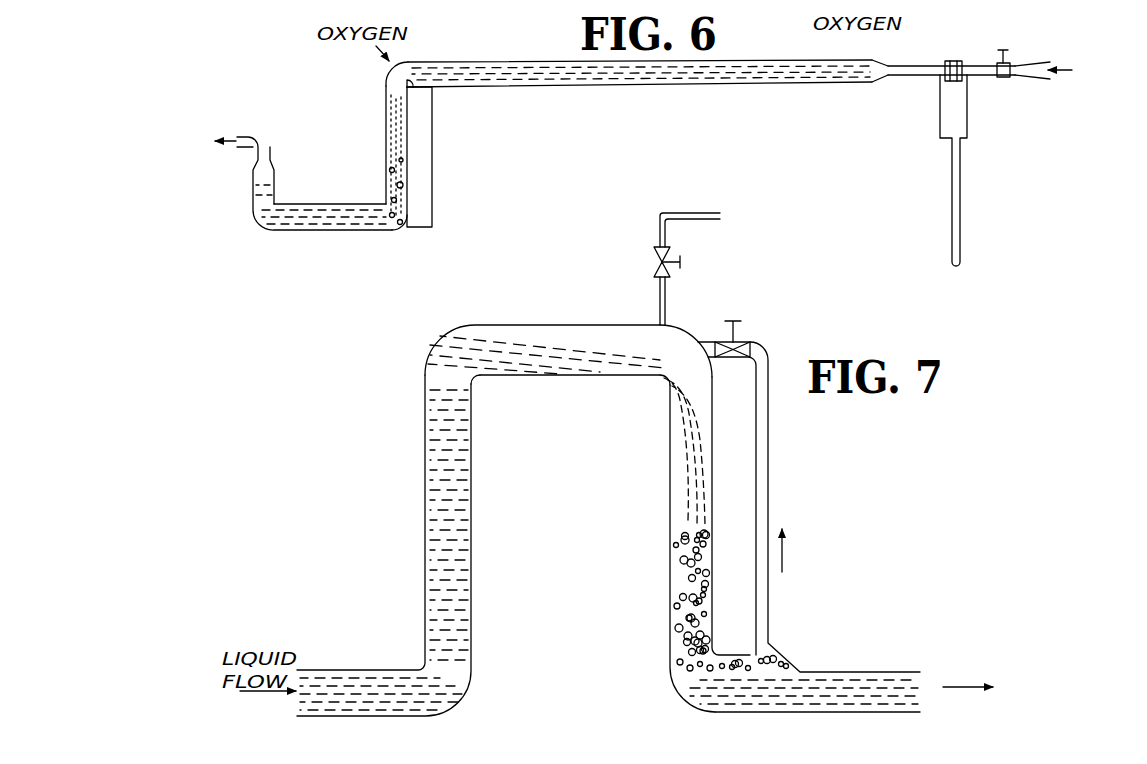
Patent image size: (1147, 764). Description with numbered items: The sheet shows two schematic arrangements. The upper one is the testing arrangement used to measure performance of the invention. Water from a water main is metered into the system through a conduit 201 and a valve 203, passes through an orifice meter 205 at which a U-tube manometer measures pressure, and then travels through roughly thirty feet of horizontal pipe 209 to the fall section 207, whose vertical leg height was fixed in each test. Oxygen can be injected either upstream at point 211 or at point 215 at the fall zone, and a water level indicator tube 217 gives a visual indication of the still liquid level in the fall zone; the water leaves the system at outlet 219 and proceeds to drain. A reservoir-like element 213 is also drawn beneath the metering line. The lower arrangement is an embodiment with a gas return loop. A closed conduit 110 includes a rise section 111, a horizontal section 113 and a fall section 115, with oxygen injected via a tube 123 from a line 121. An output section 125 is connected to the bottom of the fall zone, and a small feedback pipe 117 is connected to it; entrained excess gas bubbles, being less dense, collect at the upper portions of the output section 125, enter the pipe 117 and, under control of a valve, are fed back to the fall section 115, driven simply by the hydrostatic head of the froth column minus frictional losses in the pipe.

In FIG. 6, the conduit 201 is at (1027, 62).
In FIG. 6, the valve 203 is at (1002, 78).
In FIG. 6, the orifice meter 205 is at (968, 48).
In FIG. 6, the fall section 207 is at (386, 135).
In FIG. 6, the horizontal pipe 209 is at (512, 86).
In FIG. 6, the upstream oxygen injection point 211 is at (850, 56).
In FIG. 6, the reservoir 213 is at (940, 111).
In FIG. 6, the oxygen injection point at fall zone 215 is at (378, 64).
In FIG. 6, the water level indicator tube 217 is at (432, 204).
In FIG. 6, the outlet 219 is at (226, 136).
In FIG. 7, the closed conduit 110 is at (610, 306).
In FIG. 7, the rise section 111 is at (473, 563).
In FIG. 7, the horizontal section 113 is at (548, 325).
In FIG. 7, the fall section 115 is at (668, 475).
In FIG. 7, the feedback pipe 117 is at (770, 467).
In FIG. 7, the line 121 is at (722, 214).
In FIG. 7, the tube 123 is at (667, 297).
In FIG. 7, the output section 125 is at (830, 712).